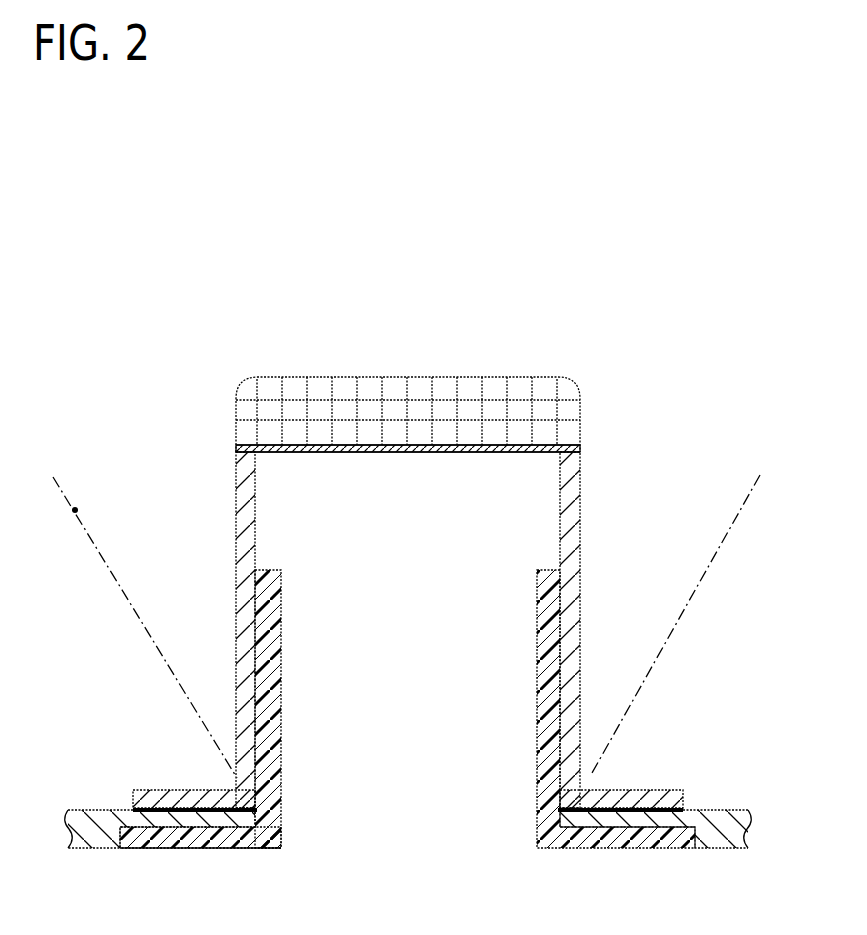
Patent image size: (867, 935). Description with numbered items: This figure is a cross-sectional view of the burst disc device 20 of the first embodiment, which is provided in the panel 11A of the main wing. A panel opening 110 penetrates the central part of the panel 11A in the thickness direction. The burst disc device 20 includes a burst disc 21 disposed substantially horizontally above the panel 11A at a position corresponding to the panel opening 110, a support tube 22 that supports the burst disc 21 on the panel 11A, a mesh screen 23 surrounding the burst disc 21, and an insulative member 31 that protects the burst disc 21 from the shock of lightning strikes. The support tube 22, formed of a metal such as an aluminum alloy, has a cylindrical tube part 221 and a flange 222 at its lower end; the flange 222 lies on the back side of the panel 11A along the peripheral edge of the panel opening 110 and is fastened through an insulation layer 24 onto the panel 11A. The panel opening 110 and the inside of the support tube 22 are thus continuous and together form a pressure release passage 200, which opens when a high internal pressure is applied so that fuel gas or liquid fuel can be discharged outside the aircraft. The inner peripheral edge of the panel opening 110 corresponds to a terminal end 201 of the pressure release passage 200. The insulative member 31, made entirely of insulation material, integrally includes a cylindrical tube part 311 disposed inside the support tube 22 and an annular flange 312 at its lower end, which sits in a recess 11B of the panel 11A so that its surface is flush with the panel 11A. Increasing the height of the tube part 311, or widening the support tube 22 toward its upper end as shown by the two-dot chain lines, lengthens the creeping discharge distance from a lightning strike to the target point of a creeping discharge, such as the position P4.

The burst disc device 20 is at (408, 541).
The burst disc 21 is at (328, 443).
The mesh screen 23 is at (508, 378).
The support tube 22 is at (580, 598).
The tube part 221 is at (236, 610).
The flange 222 is at (170, 790).
The insulation layer 24 is at (610, 800).
The pressure release passage 200 is at (425, 652).
The insulative member 31 is at (232, 750).
The tube part 311 is at (281, 735).
The annular flange 312 is at (170, 848).
The terminal end 201 is at (252, 848).
The recess 11B is at (132, 835).
The panel 11A is at (725, 848).
The panel opening 110 is at (560, 845).
The position P4 is at (406, 626).